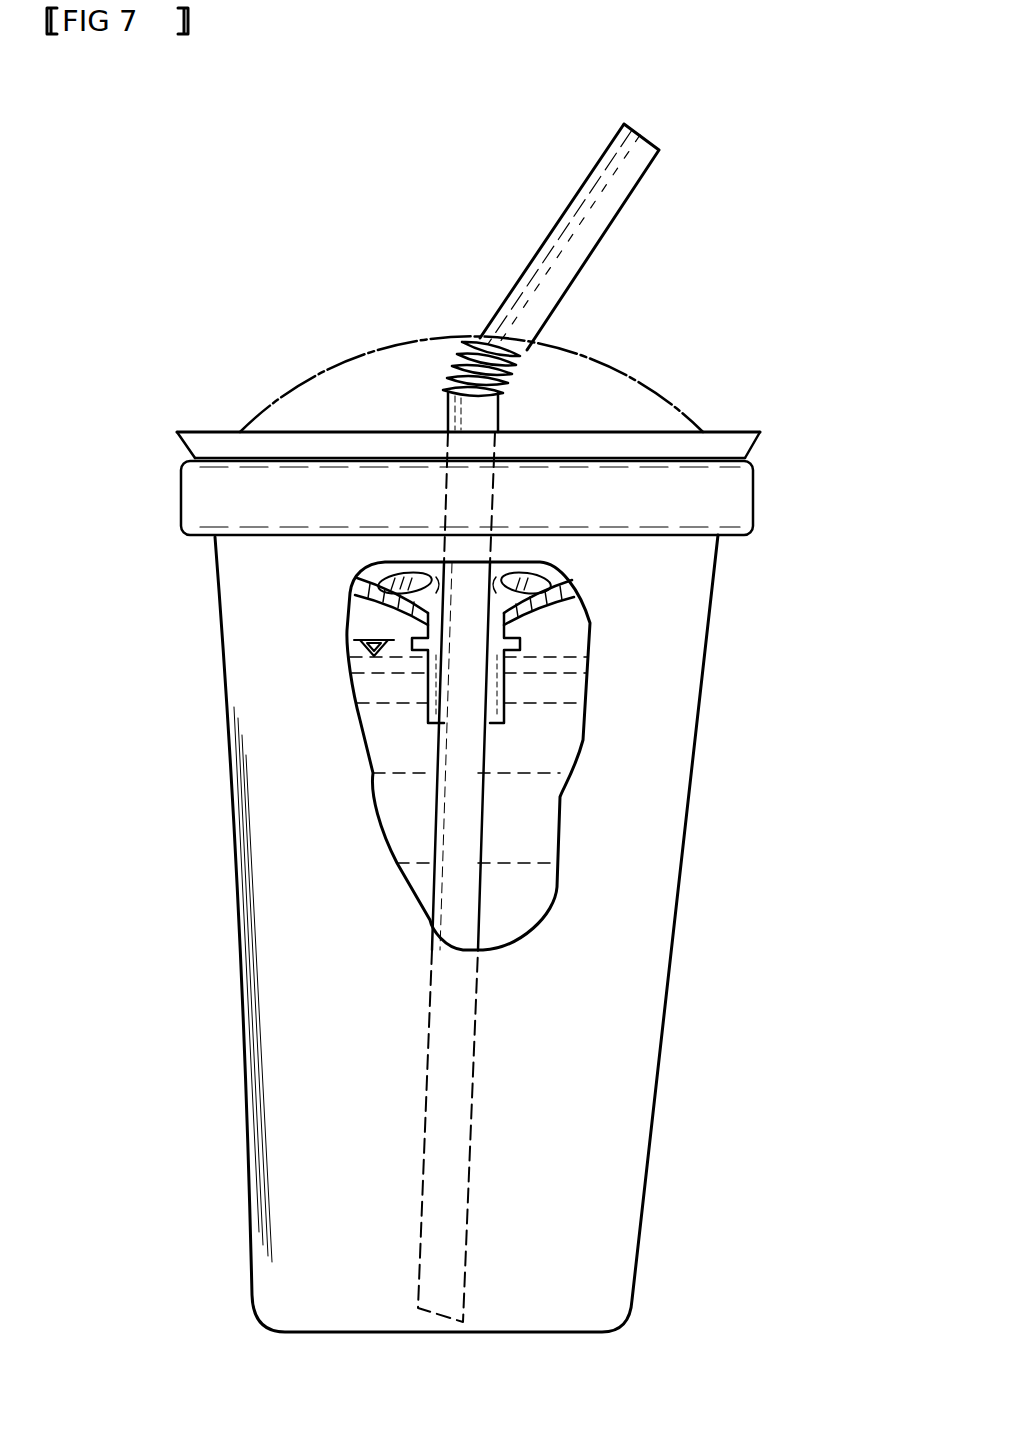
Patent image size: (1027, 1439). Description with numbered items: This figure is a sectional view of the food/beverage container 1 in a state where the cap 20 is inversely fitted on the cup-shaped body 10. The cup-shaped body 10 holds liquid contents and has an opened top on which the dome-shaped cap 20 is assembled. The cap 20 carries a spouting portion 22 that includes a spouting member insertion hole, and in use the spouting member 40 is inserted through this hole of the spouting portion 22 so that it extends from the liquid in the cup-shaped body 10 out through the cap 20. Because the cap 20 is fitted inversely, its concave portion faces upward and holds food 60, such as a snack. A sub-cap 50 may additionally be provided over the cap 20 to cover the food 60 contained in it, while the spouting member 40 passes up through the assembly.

The food/beverage container 1 is at (709, 919).
The cup-shaped body 10 is at (248, 1120).
The cap 20 is at (222, 430).
The spouting portion 22 is at (423, 682).
The spouting member 40 is at (527, 267).
The sub-cap 50 is at (372, 343).
The food 60 is at (347, 642).